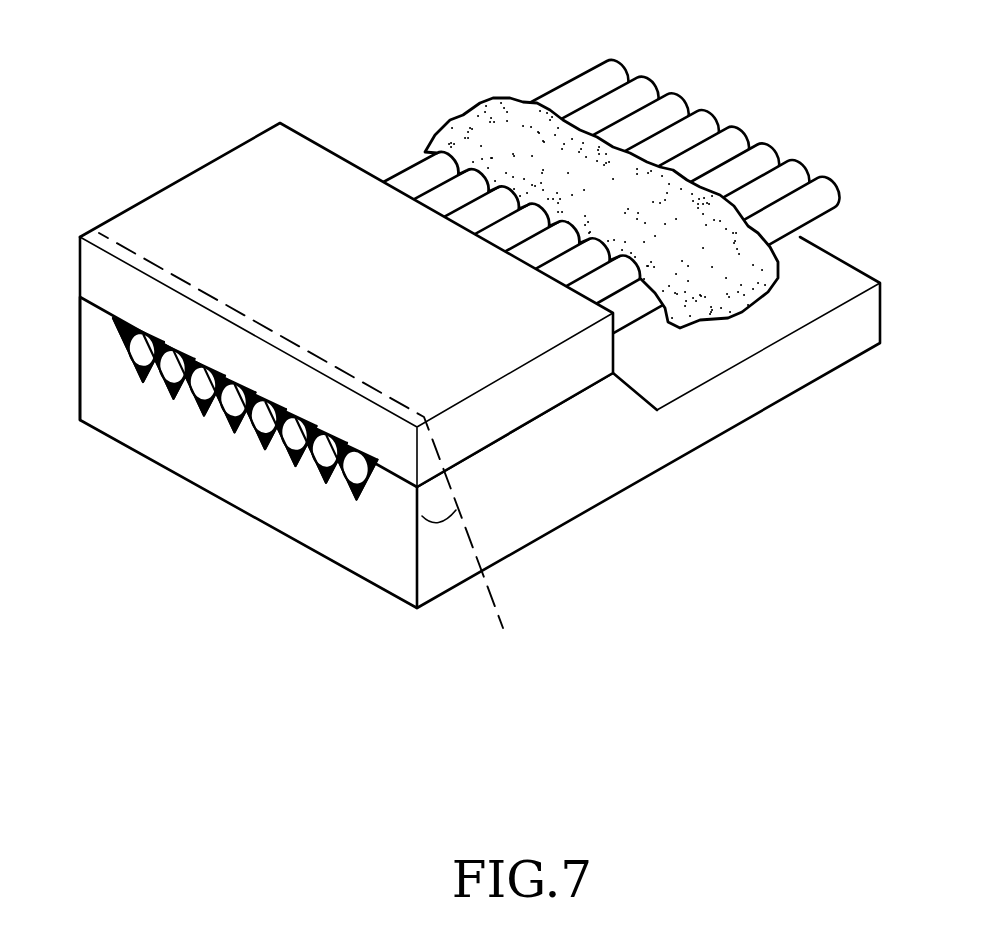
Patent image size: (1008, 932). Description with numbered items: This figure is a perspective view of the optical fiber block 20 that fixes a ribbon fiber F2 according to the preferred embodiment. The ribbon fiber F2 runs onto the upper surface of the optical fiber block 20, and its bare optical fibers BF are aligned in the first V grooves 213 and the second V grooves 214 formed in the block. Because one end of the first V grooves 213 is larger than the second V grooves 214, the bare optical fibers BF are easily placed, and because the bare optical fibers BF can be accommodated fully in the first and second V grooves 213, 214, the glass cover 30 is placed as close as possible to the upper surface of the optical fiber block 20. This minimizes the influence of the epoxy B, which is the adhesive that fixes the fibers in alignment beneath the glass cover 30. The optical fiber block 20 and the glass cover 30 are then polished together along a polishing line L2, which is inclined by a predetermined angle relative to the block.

The optical fiber block 20 is at (613, 478).
The glass cover 30 is at (237, 162).
The first V grooves 213 is at (367, 493).
The second V grooves 214 is at (193, 408).
The bare optical fibers BF is at (300, 447).
The epoxy B is at (460, 113).
The ribbon fiber F2 is at (851, 196).
The polishing line L2 is at (99, 230).